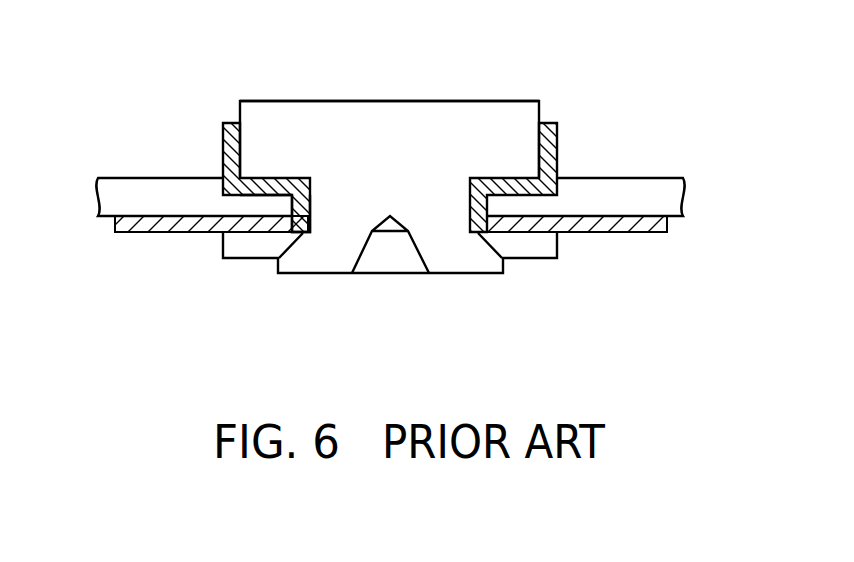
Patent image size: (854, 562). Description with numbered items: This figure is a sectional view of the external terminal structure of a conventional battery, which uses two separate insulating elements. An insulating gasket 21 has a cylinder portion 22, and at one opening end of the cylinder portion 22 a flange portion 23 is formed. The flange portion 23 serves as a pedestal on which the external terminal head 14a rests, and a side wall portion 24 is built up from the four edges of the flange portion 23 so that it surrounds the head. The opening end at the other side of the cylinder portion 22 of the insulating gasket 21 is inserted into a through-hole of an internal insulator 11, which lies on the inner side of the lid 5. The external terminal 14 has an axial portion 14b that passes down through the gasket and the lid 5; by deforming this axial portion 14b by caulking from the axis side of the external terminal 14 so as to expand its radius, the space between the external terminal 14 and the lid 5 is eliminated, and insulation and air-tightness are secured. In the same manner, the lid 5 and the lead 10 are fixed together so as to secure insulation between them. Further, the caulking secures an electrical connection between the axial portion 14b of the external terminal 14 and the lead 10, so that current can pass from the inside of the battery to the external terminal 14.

The external terminal 14 is at (441, 100).
The external terminal head 14a is at (332, 115).
The axial portion 14b is at (338, 274).
The lead 10 is at (532, 259).
The side wall portion 24 is at (222, 152).
The insulating gasket 21 is at (562, 145).
The lid 5 is at (647, 186).
The internal insulator 11 is at (637, 233).
The flange portion 23 is at (240, 197).
The cylinder portion 22 is at (303, 229).